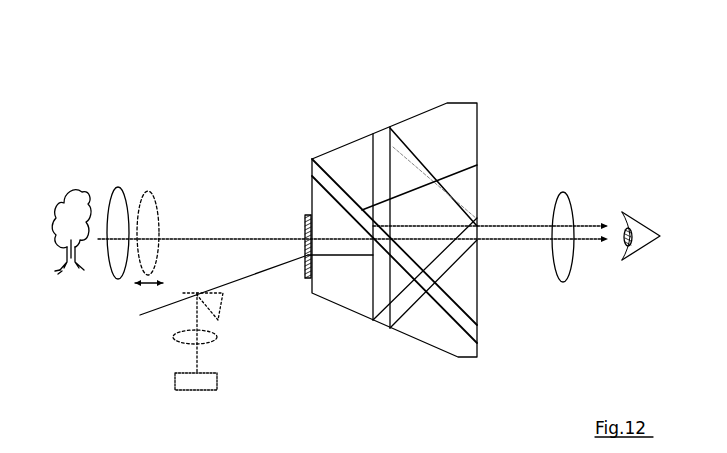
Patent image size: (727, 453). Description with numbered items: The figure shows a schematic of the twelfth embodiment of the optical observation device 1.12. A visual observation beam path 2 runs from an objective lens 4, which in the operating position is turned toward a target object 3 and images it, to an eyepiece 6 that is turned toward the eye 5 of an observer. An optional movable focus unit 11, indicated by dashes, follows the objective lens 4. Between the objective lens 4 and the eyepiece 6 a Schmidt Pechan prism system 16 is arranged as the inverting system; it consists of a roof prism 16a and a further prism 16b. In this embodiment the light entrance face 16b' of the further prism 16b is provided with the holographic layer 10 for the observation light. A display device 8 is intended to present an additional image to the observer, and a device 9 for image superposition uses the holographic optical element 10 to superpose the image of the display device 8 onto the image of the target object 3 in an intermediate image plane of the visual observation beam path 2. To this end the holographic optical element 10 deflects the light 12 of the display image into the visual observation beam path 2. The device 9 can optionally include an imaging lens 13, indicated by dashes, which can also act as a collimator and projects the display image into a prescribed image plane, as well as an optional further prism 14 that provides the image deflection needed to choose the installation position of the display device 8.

The target object 3 is at (58, 185).
The objective lens 4 is at (118, 203).
The movable focus unit 11 is at (148, 192).
The visual observation beam path 2 is at (220, 238).
The Schmidt Pechan prism system 16 is at (401, 77).
The roof prism 16a is at (460, 117).
The further prism 16b is at (425, 320).
The light entrance face of the further prism 16b' is at (373, 231).
The holographic optical element 10 is at (301, 272).
The further prism 14 is at (212, 291).
The light to be superposed 12 is at (242, 282).
The device for image superposition 9 is at (231, 342).
The imaging lens 13 is at (178, 338).
The display device 8 is at (175, 382).
The eyepiece 6 is at (562, 207).
The eye 5 is at (647, 257).
The optical observation device 1.12 is at (637, 142).